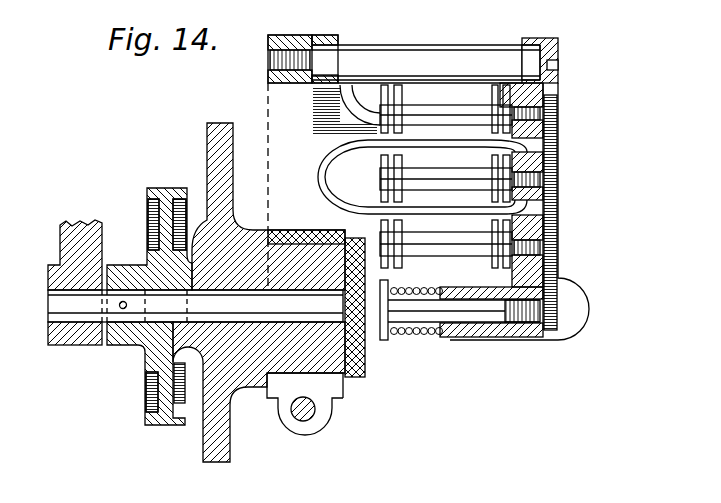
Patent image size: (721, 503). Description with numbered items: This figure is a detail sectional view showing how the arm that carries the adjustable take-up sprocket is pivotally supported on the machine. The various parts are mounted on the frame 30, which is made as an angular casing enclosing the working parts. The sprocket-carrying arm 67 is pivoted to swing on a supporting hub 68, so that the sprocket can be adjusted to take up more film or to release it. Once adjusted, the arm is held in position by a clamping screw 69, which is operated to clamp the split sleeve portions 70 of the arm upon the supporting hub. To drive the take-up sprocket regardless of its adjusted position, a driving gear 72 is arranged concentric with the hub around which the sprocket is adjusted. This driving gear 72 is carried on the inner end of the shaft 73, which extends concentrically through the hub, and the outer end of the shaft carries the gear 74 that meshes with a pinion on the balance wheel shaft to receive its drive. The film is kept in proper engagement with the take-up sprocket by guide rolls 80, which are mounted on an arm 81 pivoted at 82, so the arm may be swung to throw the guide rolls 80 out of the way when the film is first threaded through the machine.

The frame 30 is at (208, 440).
The arm 67 is at (268, 100).
The supporting hub 68 is at (343, 383).
The clamping screw 69 is at (300, 412).
The split sleeve portions 70 is at (323, 417).
The driving gear 72 is at (347, 362).
The shaft 73 is at (160, 307).
The gear 74 is at (167, 417).
The guide rolls 80 is at (472, 110).
The arm 81 is at (558, 127).
The pivot 82 is at (523, 62).